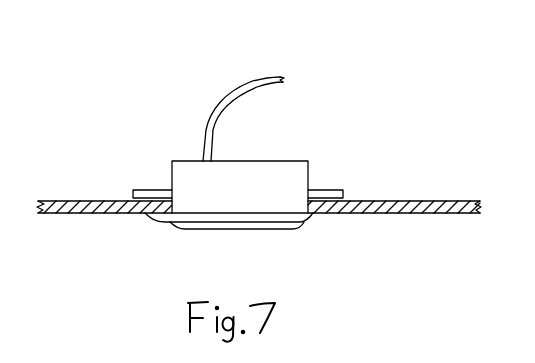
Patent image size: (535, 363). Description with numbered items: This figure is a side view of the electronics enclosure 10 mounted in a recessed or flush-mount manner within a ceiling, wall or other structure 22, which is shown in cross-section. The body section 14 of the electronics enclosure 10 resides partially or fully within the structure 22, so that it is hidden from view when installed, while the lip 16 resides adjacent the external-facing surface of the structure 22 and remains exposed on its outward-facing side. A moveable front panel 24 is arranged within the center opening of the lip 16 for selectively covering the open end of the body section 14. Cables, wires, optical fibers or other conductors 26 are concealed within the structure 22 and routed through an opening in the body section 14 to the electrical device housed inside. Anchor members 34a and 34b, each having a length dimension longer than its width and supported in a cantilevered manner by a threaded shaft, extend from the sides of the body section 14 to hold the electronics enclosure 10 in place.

The electronics enclosure 10 is at (178, 115).
The body section 14 is at (283, 177).
The lip 16 is at (313, 225).
The ceiling, wall or other structure 22 is at (441, 198).
The moveable front panel 24 is at (255, 232).
The conductors 26 is at (255, 75).
The anchor member 34a is at (148, 188).
The anchor member 34b is at (329, 190).